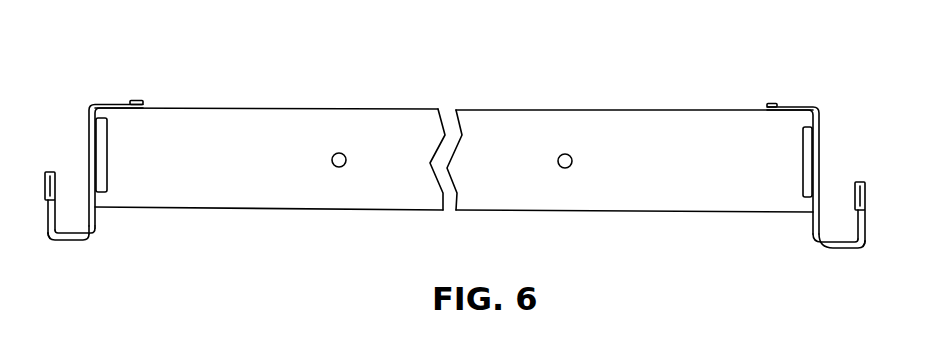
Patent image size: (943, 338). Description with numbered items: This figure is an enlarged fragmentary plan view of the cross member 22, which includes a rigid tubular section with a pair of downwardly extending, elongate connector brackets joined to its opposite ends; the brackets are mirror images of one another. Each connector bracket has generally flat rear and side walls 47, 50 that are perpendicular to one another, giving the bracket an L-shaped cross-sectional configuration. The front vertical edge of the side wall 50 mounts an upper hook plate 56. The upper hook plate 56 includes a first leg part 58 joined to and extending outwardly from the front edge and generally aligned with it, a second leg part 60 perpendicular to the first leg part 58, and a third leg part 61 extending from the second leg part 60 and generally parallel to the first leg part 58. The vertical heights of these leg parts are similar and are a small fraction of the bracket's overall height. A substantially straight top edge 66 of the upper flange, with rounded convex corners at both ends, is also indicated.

The cross member 22 is at (432, 92).
The rear wall 47 is at (132, 103).
The side wall 50 is at (88, 215).
The upper hook plate 56 is at (40, 222).
The first leg part 58 is at (97, 215).
The second leg part 60 is at (75, 238).
The third leg part 61 is at (56, 215).
The top edge 66 is at (50, 172).